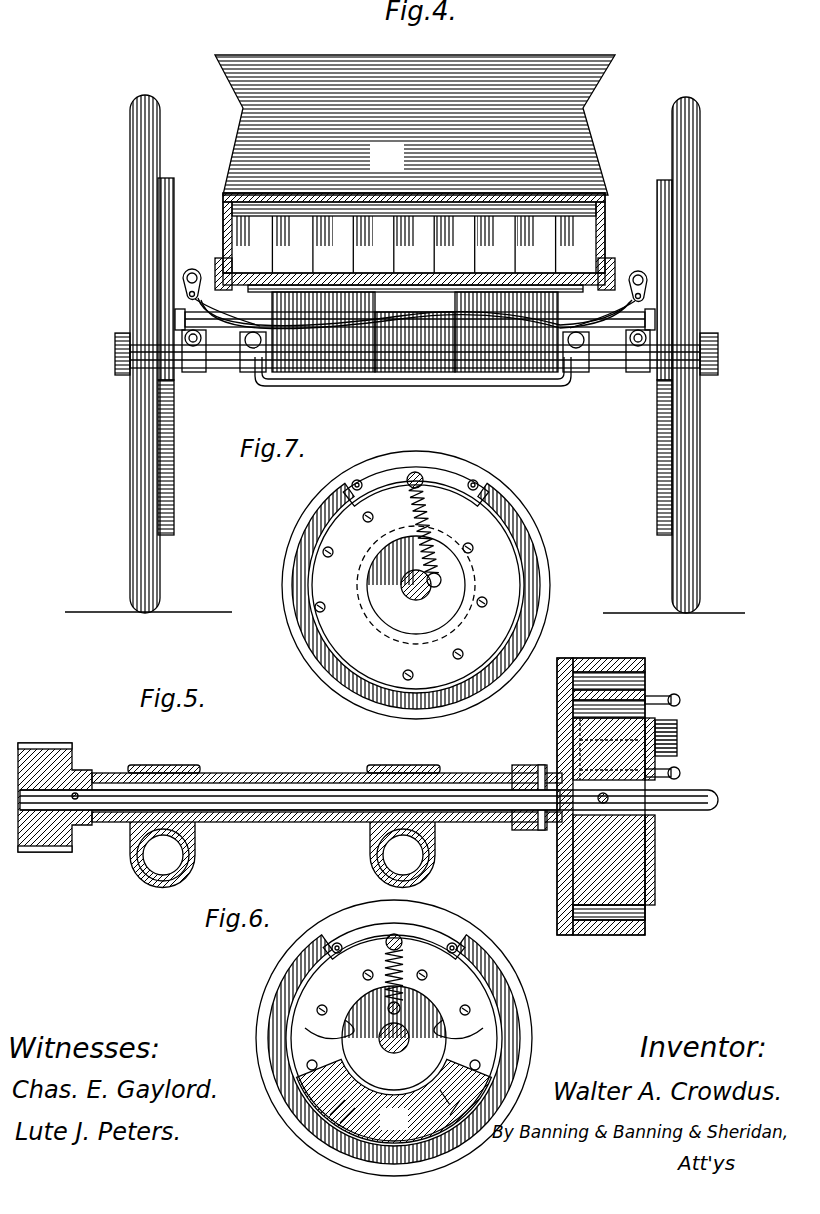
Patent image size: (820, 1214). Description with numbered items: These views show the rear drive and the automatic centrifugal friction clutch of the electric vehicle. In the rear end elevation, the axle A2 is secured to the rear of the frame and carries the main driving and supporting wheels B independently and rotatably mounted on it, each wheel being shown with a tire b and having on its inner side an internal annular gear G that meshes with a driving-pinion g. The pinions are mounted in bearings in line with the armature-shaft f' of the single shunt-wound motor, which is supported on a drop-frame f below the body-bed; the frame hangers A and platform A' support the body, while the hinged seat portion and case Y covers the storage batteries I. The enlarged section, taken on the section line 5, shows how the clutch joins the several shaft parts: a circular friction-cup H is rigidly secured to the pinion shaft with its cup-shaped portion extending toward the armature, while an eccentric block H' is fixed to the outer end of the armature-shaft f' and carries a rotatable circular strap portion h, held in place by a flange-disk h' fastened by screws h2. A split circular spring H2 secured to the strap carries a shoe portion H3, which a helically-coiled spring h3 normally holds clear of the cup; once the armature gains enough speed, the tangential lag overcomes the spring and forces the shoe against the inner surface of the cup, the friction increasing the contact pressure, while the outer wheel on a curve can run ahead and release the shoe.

In FIG. 4, the wheel b is at (128, 134).
In FIG. 4, the internal annular gear G is at (168, 180).
In FIG. 4, the seat portion and case Y is at (415, 125).
In FIG. 4, the seed compartments I is at (414, 233).
In FIG. 4, the platform A' is at (410, 280).
In FIG. 4, the pivot pin A is at (415, 373).
In FIG. 4, the main driving and supporting wheel B is at (128, 398).
In FIG. 4, the axle A2 is at (432, 362).
In FIG. 4, the drop-frame f is at (415, 360).
In FIG. 6, the drop-frame f is at (402, 1043).
In FIG. 7, the circular friction-cup H is at (402, 585).
In FIG. 5, the circular friction-cup H is at (601, 780).
In FIG. 6, the circular friction-cup H is at (375, 1038).
In FIG. 7, the split circular spring H2 is at (510, 553).
In FIG. 5, the split circular spring H2 is at (620, 906).
In FIG. 6, the split circular spring H2 is at (300, 991).
In FIG. 7, the shoe portion H3 is at (455, 478).
In FIG. 5, the shoe portion H3 is at (648, 688).
In FIG. 6, the shoe portion H3 is at (430, 935).
In FIG. 7, the eccentric block or disk H' is at (416, 585).
In FIG. 5, the eccentric block or disk H' is at (609, 860).
In FIG. 6, the eccentric block or disk H' is at (394, 1038).
In FIG. 5, the circular strap portion h is at (590, 808).
In FIG. 6, the circular strap portion h is at (394, 1092).
In FIG. 7, the flange-disk h' is at (347, 585).
In FIG. 5, the flange-disk h' is at (689, 811).
In FIG. 6, the flange-disk h' is at (439, 1016).
In FIG. 7, the screws h2 is at (318, 609).
In FIG. 5, the screws h2 is at (672, 719).
In FIG. 6, the screws h2 is at (426, 976).
In FIG. 7, the helically-coiled spring h3 is at (410, 517).
In FIG. 5, the helically-coiled spring h3 is at (680, 733).
In FIG. 6, the helically-coiled spring h3 is at (384, 986).
In FIG. 7, the armature-shaft f' is at (411, 604).
In FIG. 5, the armature-shaft f' is at (369, 785).
In FIG. 5, the driving-pinion g is at (58, 745).
In FIG. 6, the section line 5 is at (340, 893).